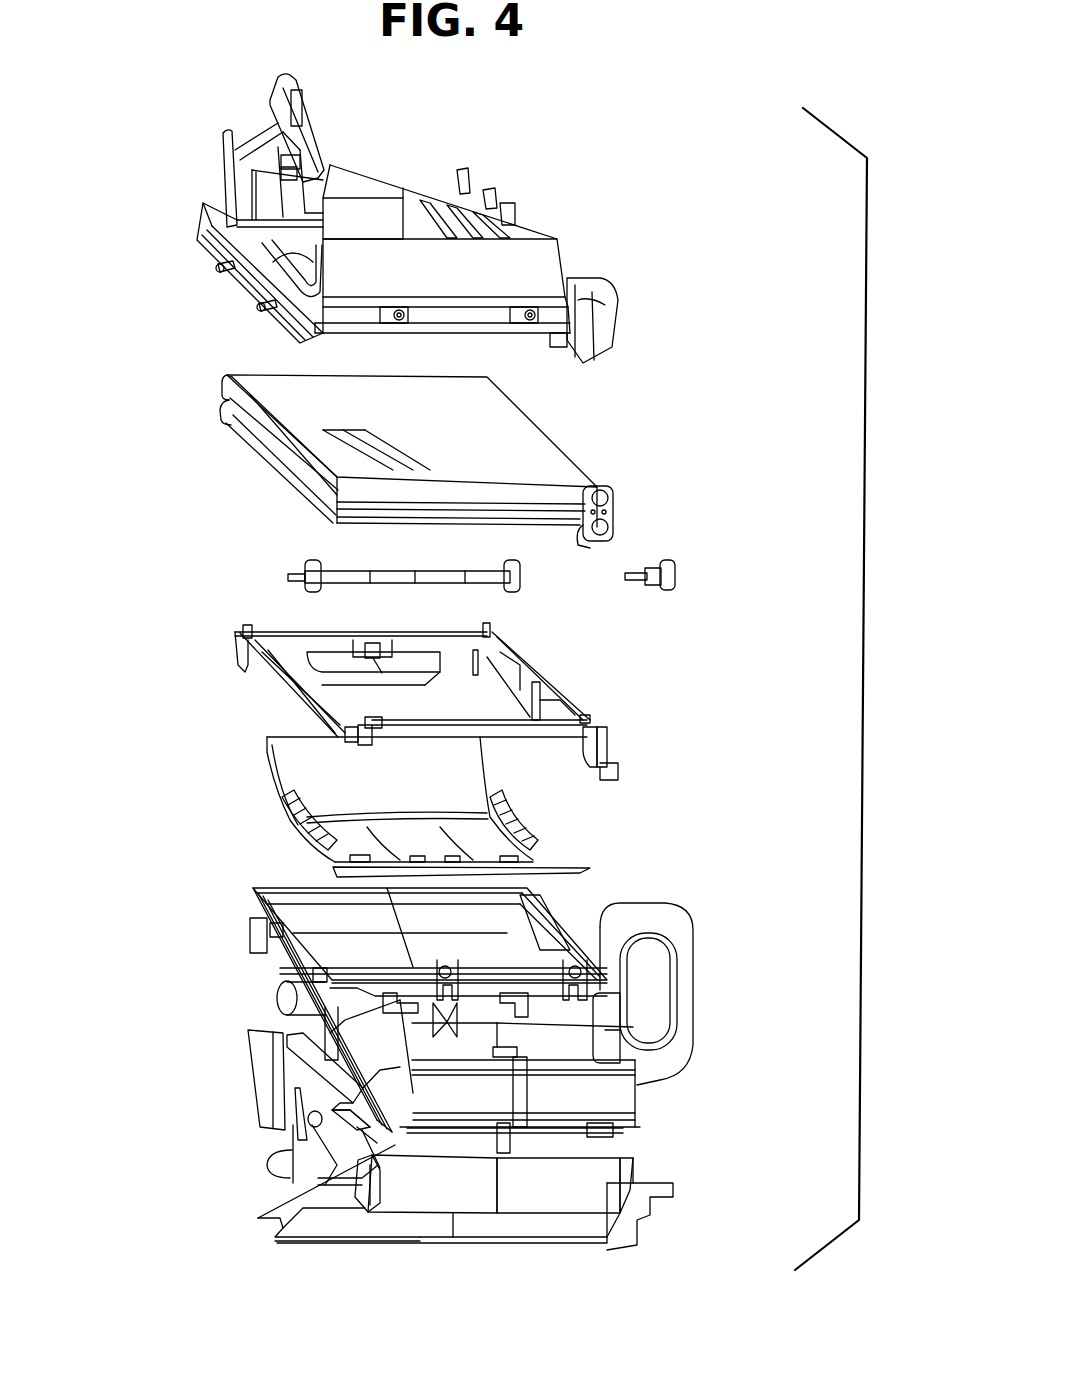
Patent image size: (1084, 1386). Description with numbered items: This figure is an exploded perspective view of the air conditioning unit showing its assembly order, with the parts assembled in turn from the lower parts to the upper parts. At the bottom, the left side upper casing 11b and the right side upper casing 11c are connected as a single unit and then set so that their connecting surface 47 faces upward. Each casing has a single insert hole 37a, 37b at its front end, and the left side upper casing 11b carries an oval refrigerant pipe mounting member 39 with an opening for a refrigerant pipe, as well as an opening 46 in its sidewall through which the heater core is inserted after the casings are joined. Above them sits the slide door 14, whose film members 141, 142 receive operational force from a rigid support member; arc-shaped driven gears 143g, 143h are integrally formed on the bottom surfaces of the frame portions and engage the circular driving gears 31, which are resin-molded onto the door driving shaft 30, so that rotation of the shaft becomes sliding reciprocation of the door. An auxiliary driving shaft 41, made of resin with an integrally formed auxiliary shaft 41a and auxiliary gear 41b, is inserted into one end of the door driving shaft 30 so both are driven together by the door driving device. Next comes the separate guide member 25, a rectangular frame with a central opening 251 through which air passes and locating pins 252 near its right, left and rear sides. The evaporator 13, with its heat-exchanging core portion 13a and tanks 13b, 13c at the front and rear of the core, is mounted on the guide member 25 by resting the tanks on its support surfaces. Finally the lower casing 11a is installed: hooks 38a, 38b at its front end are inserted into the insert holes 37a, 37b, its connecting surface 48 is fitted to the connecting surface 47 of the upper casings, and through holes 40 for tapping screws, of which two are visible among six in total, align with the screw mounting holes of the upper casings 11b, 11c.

The lower casing 11a is at (562, 238).
The left side upper casing 11b is at (557, 1173).
The right side upper casing 11c is at (425, 1177).
The evaporator 13 is at (550, 428).
The heat-exchanging core portion 13a is at (308, 417).
The tank 13b is at (437, 513).
The tank 13c is at (226, 382).
The slide door 14 is at (530, 833).
The film member 141 is at (275, 782).
The film member 142 is at (590, 873).
The driven gear 143g is at (307, 842).
The driven gear 143h is at (503, 813).
The separate guide member 25 is at (567, 690).
The opening 251 is at (372, 700).
The locating pins 252 is at (243, 670).
The door driving shaft 30 is at (440, 585).
The circular driving gears 31 is at (305, 568).
The insert hole 37a is at (575, 980).
The insert hole 37b is at (327, 977).
The hook 38a is at (395, 320).
The hook 38b is at (524, 322).
The refrigerant pipe mounting member 39 is at (647, 980).
The through holes 40 is at (216, 268).
The auxiliary driving shaft 41 is at (628, 582).
The auxiliary shaft 41a is at (650, 570).
The auxiliary gear 41b is at (675, 575).
The opening 46 is at (582, 972).
The connecting surface 47 is at (265, 893).
The connecting surface 48 is at (375, 335).